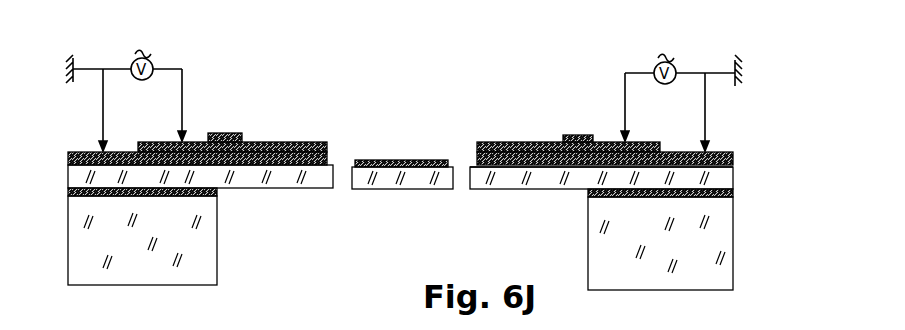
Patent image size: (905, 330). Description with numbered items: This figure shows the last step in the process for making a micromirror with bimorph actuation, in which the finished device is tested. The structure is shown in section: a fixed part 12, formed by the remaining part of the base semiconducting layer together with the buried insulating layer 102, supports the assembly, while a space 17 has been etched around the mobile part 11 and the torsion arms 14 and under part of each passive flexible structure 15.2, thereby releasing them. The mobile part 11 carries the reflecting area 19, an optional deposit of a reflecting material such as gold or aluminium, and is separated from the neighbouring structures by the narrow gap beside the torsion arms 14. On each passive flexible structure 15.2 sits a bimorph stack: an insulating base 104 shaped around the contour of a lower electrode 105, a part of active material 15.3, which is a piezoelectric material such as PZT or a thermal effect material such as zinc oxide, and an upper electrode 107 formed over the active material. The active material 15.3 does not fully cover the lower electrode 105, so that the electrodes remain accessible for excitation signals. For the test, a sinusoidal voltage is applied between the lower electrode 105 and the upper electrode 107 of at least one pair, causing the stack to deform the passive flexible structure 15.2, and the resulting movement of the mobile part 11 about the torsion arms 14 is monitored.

The mobile part 11 is at (410, 180).
The fixed part 12 is at (700, 277).
The torsion arms 14 is at (461, 176).
The passive flexible structure 15.2 is at (735, 178).
The active material part 15.3 is at (335, 150).
The space 17 is at (313, 243).
The reflecting area 19 is at (408, 160).
The buried insulating layer 102 is at (734, 194).
The insulating base 104 is at (735, 167).
The lower electrode 105 is at (716, 158).
The upper electrode 107 is at (615, 142).